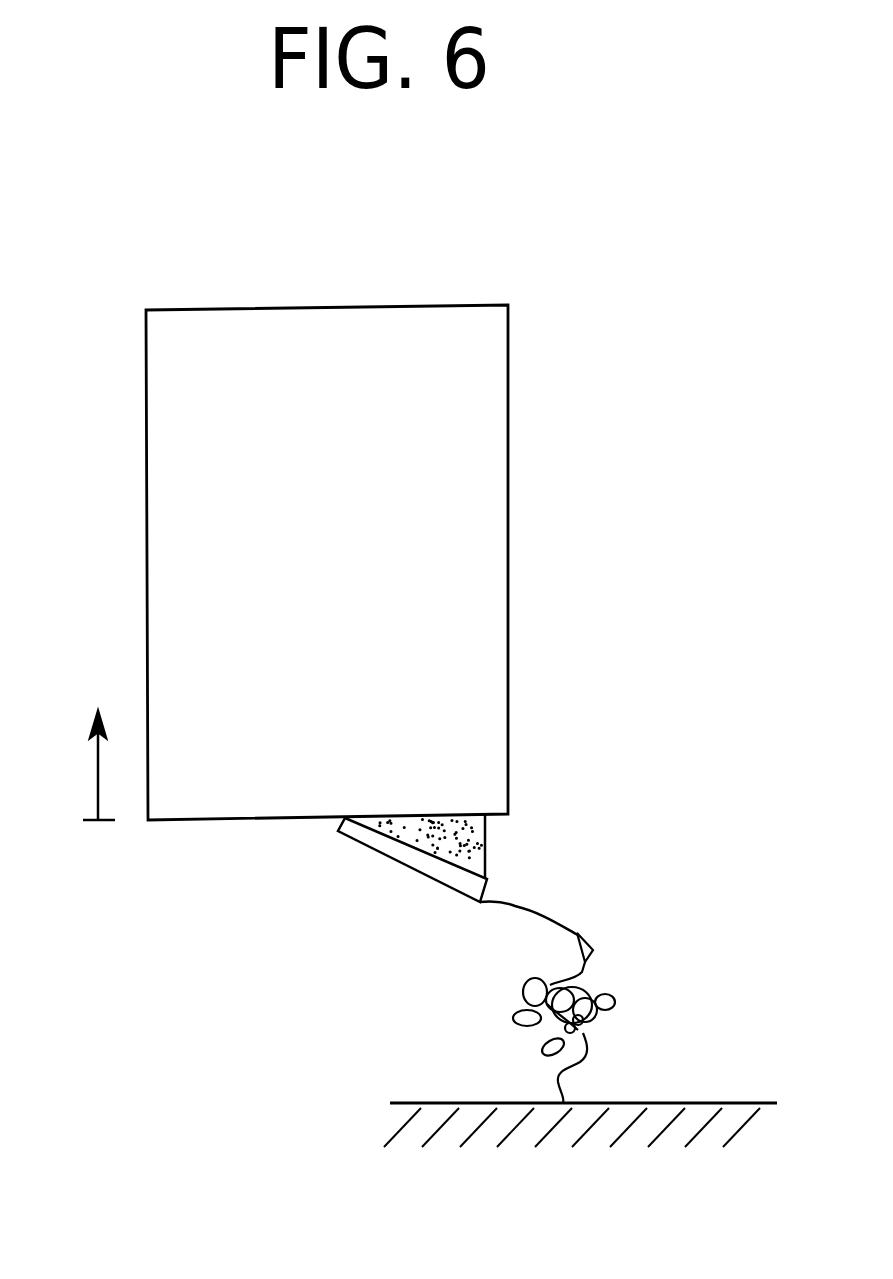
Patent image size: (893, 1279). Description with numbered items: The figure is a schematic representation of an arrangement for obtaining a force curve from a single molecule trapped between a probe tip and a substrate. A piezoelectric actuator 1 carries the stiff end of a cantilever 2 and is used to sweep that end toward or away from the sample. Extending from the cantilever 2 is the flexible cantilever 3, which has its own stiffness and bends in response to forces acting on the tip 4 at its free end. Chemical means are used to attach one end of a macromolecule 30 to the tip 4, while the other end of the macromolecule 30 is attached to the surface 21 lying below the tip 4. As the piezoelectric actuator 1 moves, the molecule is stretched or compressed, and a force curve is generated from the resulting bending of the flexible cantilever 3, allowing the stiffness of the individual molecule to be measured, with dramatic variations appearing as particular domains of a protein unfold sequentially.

The piezoelectric actuator 1 is at (160, 448).
The cantilever 2 is at (392, 853).
The flexible cantilever 3 is at (513, 905).
The tip 4 is at (593, 952).
The macromolecule 30 is at (597, 1024).
The surface 21 is at (667, 1103).